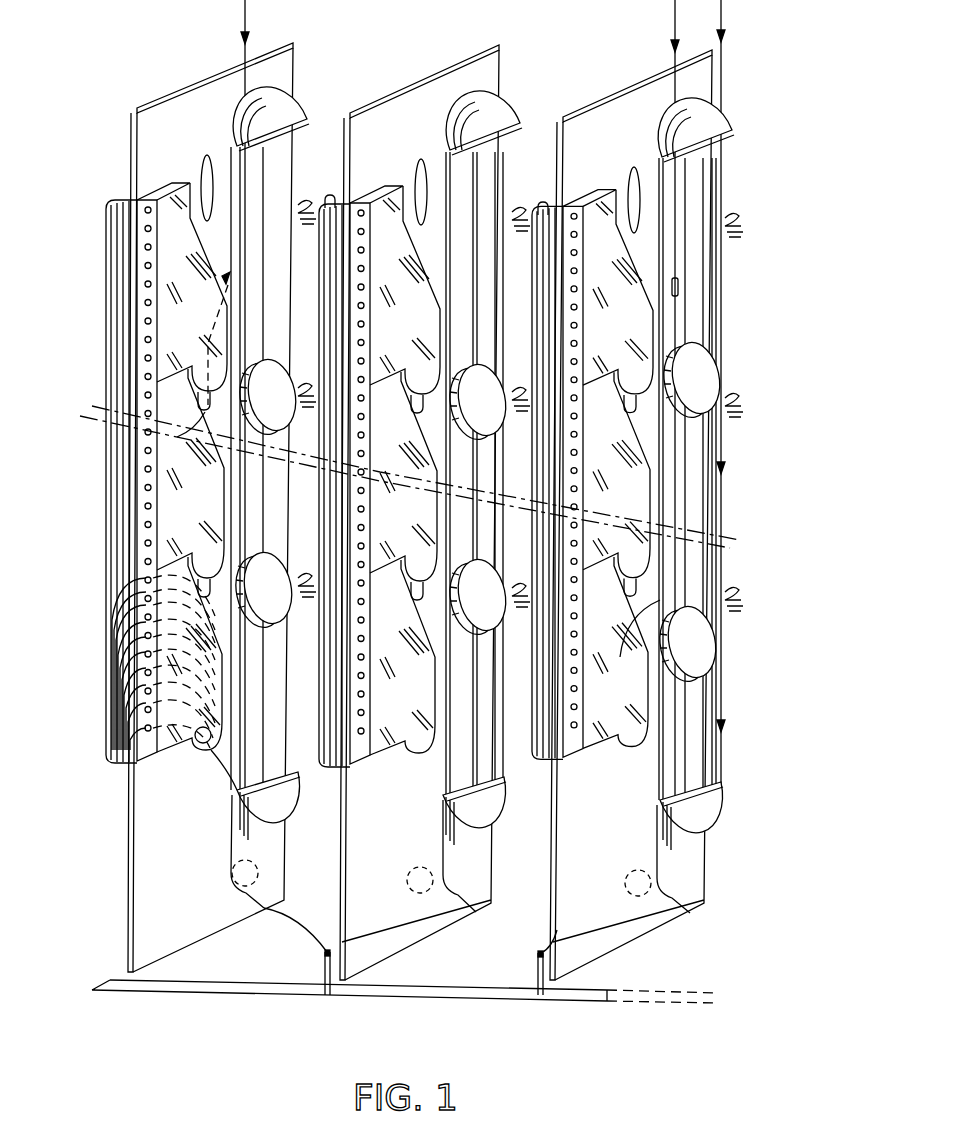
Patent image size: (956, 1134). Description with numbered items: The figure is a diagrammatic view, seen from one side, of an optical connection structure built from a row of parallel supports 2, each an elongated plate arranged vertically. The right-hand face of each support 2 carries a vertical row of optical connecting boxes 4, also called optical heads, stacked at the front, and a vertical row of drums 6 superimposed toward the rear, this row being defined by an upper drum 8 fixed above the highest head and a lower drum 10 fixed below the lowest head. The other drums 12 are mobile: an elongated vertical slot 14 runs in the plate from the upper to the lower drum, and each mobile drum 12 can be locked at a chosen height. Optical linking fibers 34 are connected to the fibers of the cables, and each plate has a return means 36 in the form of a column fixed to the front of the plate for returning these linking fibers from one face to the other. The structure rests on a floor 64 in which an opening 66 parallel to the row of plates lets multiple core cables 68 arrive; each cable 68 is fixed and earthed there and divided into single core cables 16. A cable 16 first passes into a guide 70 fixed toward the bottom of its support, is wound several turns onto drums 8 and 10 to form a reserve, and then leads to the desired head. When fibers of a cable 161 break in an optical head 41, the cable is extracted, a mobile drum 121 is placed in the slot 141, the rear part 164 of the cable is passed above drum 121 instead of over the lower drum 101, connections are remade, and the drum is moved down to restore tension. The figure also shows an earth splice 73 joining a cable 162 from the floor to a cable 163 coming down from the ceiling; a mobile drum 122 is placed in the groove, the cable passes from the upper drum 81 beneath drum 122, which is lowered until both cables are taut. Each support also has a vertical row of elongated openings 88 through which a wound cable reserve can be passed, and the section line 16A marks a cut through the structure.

The support 2 is at (137, 112).
The optical connecting box 4 is at (178, 296).
The optical head 41 is at (594, 464).
The drum 6 is at (326, 100).
The upper drum 8 is at (278, 113).
The upper drum 81 is at (713, 128).
The lower drum 10 is at (280, 800).
The lower drum 101 is at (710, 795).
The mobile drum 12 is at (280, 372).
The mobile drum 121 is at (700, 640).
The mobile drum 122 is at (705, 380).
The elongated vertical slot 14 is at (262, 200).
The slot 141 is at (690, 500).
The single core cable 16 is at (225, 766).
The single core cable 161 is at (622, 635).
The single core cable 162 is at (672, 332).
The single core cable 163 is at (673, 30).
The rear part of cable 164 is at (243, 12).
The section line 16A is at (758, 520).
The optical linking fiber 34 is at (110, 760).
The return means 36 is at (100, 228).
The floor 64 is at (126, 1032).
The opening 66 is at (600, 1000).
The multiple core cable 68 is at (322, 980).
The guide 70 is at (240, 862).
The earth splice 73 is at (677, 290).
The elongated opening 88 is at (177, 437).